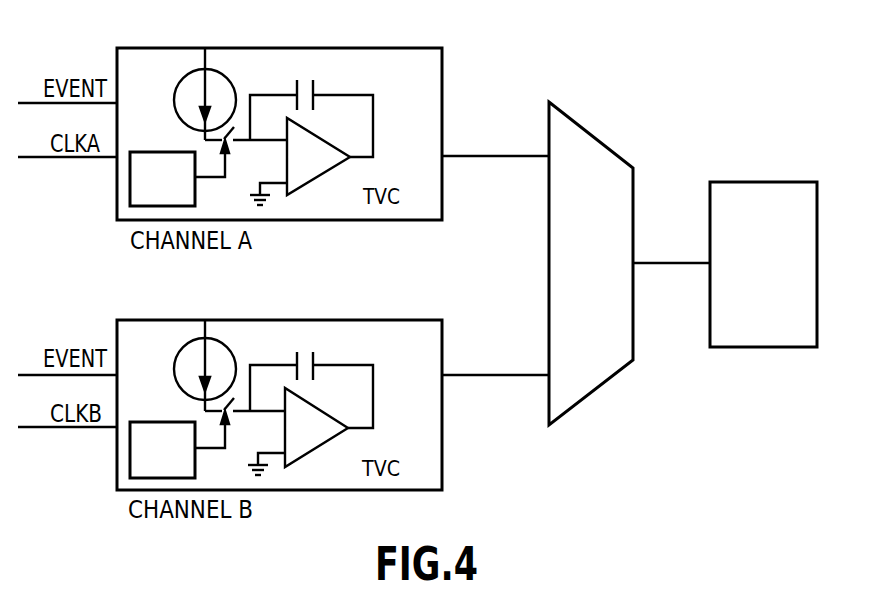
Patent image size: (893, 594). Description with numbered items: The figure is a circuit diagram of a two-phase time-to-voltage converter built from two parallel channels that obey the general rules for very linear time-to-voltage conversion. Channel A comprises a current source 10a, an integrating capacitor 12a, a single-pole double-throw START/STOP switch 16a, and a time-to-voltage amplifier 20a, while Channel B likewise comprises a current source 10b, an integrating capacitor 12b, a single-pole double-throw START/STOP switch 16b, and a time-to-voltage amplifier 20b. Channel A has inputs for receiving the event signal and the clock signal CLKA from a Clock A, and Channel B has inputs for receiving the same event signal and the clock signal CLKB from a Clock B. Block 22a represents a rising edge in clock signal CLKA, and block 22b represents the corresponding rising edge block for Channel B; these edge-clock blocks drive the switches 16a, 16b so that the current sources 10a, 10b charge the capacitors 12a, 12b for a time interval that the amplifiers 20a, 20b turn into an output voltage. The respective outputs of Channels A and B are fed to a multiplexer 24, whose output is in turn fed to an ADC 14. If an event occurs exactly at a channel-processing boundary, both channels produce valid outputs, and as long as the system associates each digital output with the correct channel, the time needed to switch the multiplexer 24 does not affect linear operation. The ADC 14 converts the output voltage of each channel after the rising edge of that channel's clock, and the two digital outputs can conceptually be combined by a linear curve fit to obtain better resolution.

The current source 10a is at (182, 78).
The single-pole double-throw START/STOP switch 16a is at (228, 132).
The integrating capacitor 12a is at (307, 84).
The time-to-voltage amplifier 20a is at (317, 173).
The rising edge block 22a is at (130, 184).
The current source 10b is at (174, 372).
The single-pole double-throw START/STOP switch 16b is at (229, 405).
The integrating capacitor 12b is at (312, 358).
The time-to-voltage amplifier 20b is at (315, 448).
The rising edge block 22b is at (130, 454).
The multiplexer 24 is at (583, 130).
The ADC 14 is at (750, 182).